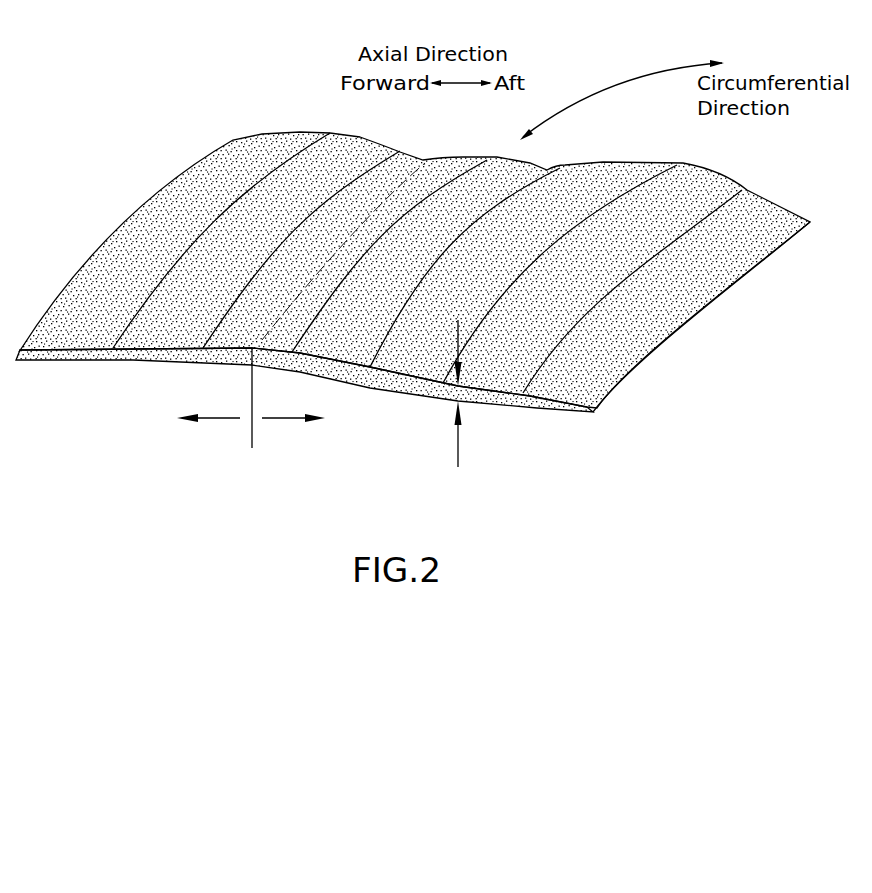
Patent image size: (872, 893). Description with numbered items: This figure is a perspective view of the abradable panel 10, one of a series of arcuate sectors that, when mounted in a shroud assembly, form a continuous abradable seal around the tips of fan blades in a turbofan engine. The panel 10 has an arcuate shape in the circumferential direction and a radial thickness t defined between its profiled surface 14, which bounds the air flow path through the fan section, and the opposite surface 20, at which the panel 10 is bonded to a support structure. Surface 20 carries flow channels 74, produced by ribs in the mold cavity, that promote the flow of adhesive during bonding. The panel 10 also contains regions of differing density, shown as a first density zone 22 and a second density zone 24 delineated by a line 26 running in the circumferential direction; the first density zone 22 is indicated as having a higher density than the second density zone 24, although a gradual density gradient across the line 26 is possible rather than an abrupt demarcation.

The abradable panel 10 is at (174, 135).
The surface 20 is at (155, 213).
The profiled surface 14 is at (67, 363).
The flow channels 74 is at (560, 167).
The line 26 is at (250, 437).
The first density zone 22 is at (165, 415).
The second density zone 24 is at (343, 441).
The radial thickness t is at (458, 455).